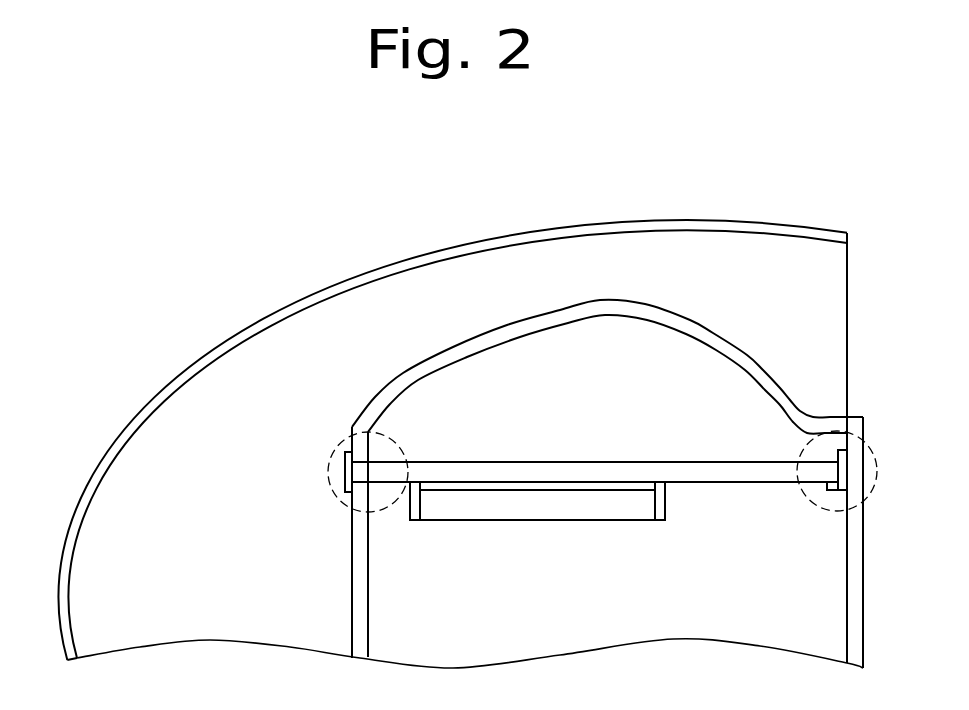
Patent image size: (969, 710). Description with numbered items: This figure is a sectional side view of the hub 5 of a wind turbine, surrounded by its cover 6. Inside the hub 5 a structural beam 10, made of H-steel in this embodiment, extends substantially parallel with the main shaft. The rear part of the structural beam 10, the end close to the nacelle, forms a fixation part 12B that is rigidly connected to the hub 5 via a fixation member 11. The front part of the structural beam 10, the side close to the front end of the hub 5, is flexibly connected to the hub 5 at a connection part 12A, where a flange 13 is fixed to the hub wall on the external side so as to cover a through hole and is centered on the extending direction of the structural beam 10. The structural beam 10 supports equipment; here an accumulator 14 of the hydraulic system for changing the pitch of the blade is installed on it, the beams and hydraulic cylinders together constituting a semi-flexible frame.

The cover 6 is at (310, 295).
The hub 5 is at (427, 355).
The structural beam 10 is at (577, 467).
The connection part 12A is at (333, 448).
The fixation part 12B is at (812, 434).
The flange 13 is at (335, 480).
The accumulator 14 is at (532, 512).
The fixation member 11 is at (840, 490).